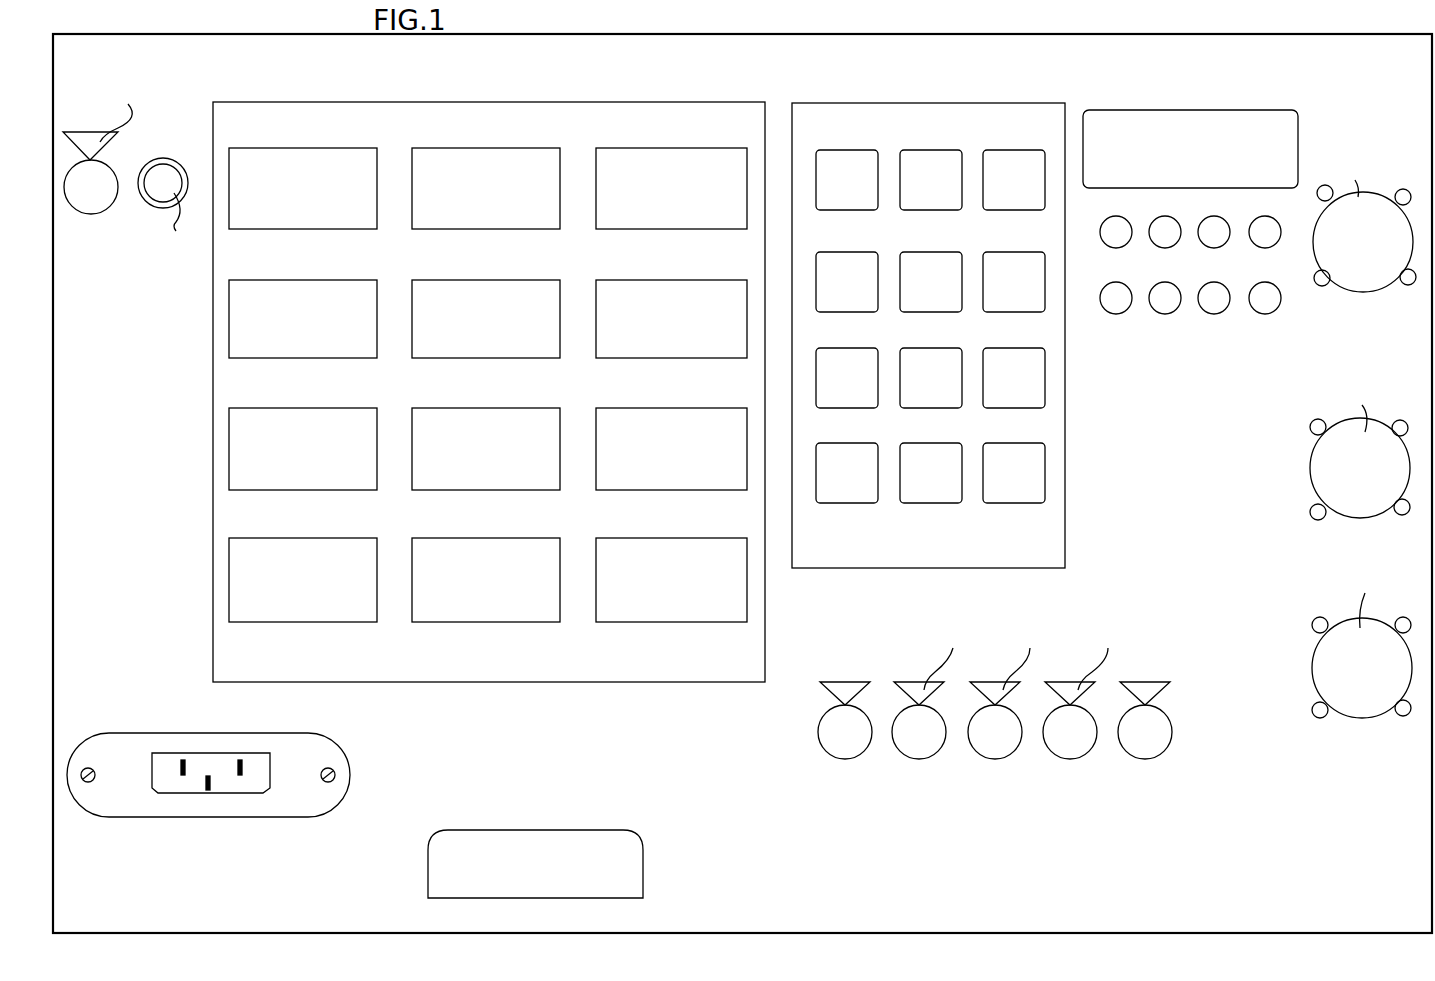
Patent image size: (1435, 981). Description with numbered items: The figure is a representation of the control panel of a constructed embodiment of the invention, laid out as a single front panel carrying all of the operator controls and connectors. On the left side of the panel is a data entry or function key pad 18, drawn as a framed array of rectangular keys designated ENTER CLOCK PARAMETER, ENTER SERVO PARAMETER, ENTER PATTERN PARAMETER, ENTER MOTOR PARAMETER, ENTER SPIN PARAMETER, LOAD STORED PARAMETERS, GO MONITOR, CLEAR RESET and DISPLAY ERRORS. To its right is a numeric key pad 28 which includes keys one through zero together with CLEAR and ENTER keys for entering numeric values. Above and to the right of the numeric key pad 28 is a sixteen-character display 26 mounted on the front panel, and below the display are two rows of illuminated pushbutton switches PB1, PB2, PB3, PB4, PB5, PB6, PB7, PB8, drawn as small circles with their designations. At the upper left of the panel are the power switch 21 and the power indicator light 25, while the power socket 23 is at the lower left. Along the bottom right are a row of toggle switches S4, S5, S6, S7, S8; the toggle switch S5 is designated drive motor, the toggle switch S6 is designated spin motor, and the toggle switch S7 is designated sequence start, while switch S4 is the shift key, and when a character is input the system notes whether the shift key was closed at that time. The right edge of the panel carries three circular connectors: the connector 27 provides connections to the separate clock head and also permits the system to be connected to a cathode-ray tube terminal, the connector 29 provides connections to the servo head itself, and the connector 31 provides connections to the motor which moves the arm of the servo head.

The function key pad 18 is at (485, 115).
The power switch 21 is at (95, 200).
The power socket 23 is at (228, 785).
The power indicator light 25 is at (160, 178).
The 16-character display 26 is at (1190, 115).
The connector 27 is at (1375, 205).
The numeric key pad 28 is at (903, 123).
The connector 29 is at (1313, 468).
The connector 31 is at (1328, 652).
The illuminated pushbutton switch PB1 is at (1116, 228).
The illuminated pushbutton switch PB2 is at (1177, 203).
The illuminated pushbutton switch PB3 is at (1230, 203).
The illuminated pushbutton switch PB4 is at (1287, 203).
The illuminated pushbutton switch PB5 is at (1122, 302).
The illuminated pushbutton switch PB6 is at (1170, 302).
The illuminated pushbutton switch PB7 is at (1222, 302).
The illuminated pushbutton switch PB8 is at (1265, 303).
The shift key switch S4 is at (830, 730).
The drive motor toggle switch S5 is at (927, 745).
The spin motor toggle switch S6 is at (995, 745).
The sequence start toggle switch S7 is at (1068, 745).
The toggle switch S8 is at (1143, 745).